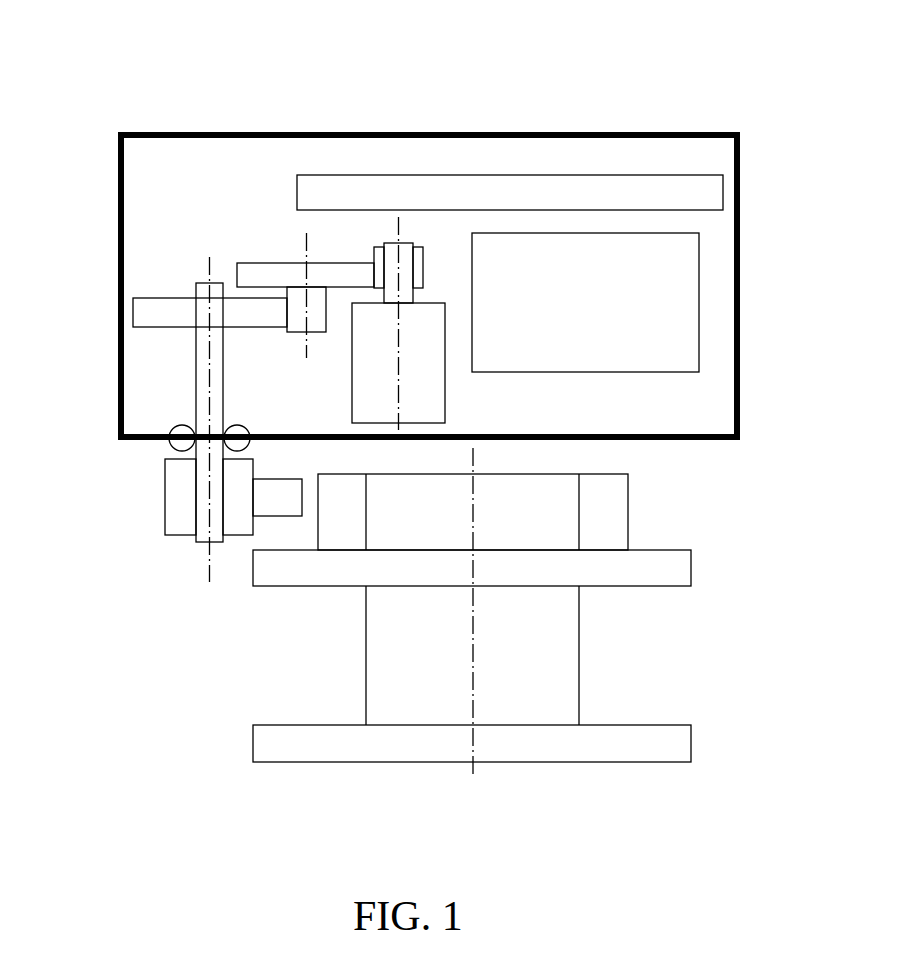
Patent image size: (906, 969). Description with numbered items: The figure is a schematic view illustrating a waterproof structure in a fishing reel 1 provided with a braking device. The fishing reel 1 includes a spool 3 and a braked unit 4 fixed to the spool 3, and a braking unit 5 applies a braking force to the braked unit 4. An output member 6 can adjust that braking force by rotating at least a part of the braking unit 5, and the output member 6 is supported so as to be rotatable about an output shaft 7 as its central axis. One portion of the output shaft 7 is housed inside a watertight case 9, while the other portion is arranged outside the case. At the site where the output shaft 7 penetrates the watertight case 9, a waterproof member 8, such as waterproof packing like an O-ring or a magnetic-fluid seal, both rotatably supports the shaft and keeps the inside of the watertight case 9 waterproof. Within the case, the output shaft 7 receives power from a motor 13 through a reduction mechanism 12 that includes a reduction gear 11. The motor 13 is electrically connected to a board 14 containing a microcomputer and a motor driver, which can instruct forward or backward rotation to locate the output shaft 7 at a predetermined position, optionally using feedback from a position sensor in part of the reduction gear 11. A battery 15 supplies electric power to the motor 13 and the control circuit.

The fishing reel 1 is at (440, 43).
The spool 3 is at (563, 653).
The braked unit 4 is at (608, 512).
The braking unit 5 is at (277, 500).
The output member 6 is at (175, 498).
The output shaft 7 is at (204, 368).
The waterproof member 8 is at (178, 447).
The watertight case 9 is at (117, 168).
The reduction gear 11 is at (256, 274).
The reduction mechanism 12 is at (67, 218).
The motor 13 is at (423, 382).
The board 14 is at (693, 192).
The battery 15 is at (675, 302).